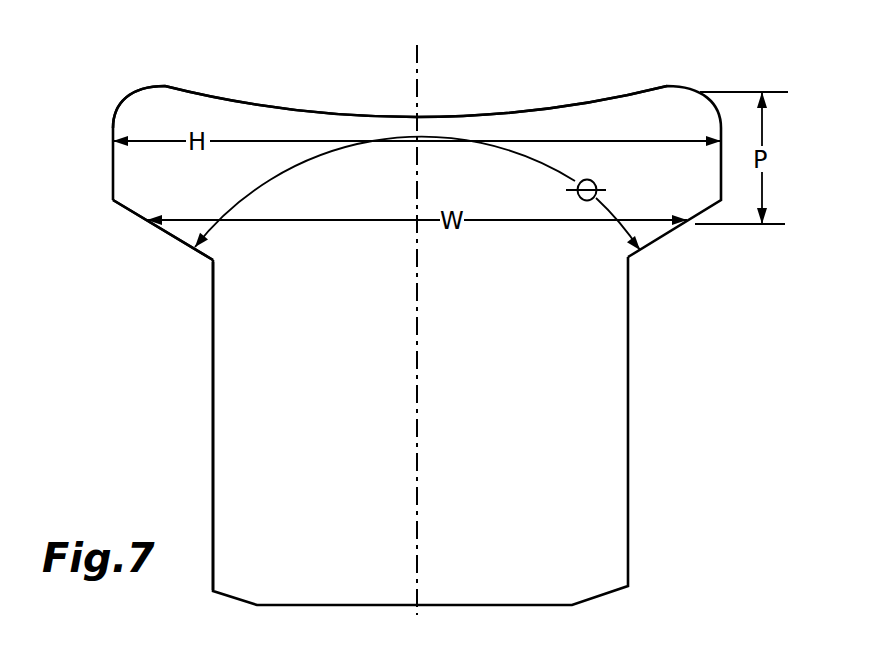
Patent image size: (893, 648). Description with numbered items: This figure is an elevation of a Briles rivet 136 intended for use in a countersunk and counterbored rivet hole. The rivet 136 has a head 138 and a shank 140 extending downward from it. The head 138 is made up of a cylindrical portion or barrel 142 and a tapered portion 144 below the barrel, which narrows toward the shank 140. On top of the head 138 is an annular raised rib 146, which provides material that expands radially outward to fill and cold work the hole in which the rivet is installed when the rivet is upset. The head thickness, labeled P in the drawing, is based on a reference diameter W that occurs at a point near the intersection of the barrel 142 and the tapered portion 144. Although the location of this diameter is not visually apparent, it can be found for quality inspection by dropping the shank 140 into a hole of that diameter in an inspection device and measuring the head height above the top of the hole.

The Briles rivet 136 is at (660, 412).
The head 138 is at (98, 177).
The shank 140 is at (213, 357).
The barrel 142 is at (113, 147).
The tapered portion 144 is at (160, 229).
The annular raised rib 146 is at (165, 86).